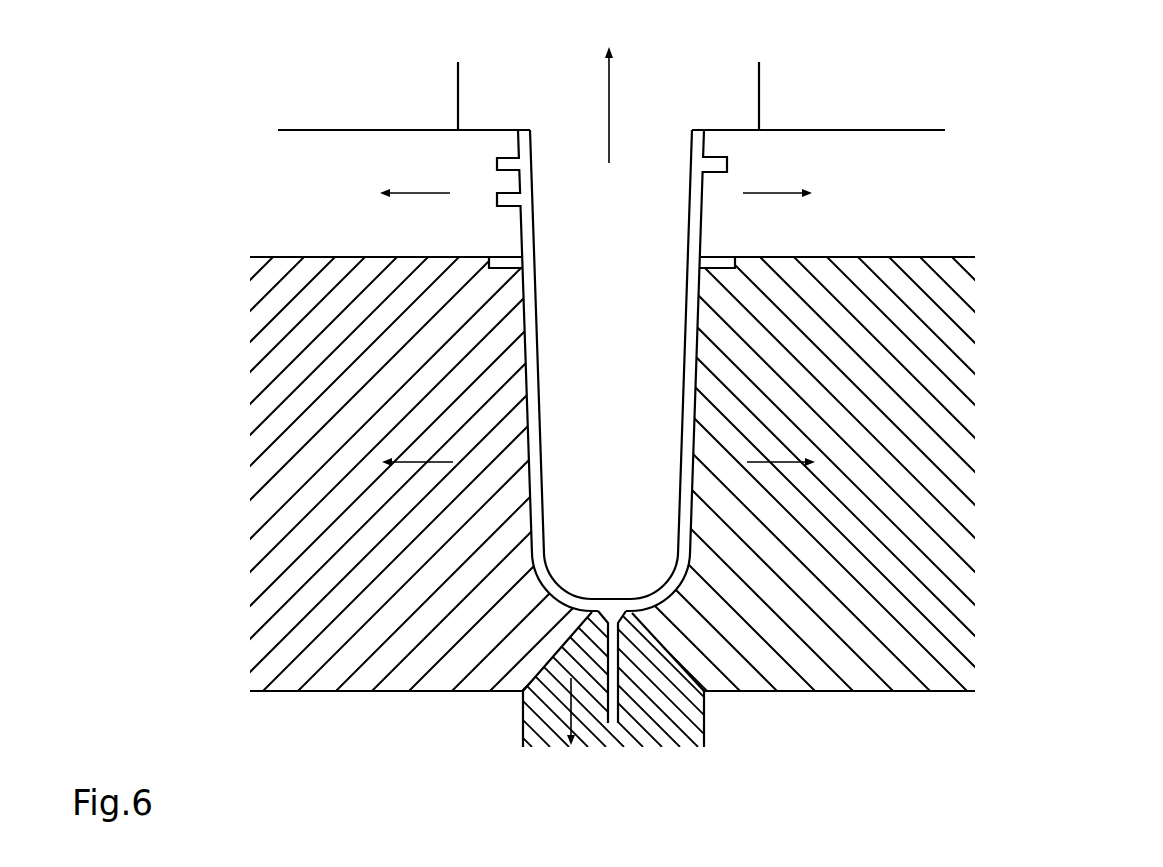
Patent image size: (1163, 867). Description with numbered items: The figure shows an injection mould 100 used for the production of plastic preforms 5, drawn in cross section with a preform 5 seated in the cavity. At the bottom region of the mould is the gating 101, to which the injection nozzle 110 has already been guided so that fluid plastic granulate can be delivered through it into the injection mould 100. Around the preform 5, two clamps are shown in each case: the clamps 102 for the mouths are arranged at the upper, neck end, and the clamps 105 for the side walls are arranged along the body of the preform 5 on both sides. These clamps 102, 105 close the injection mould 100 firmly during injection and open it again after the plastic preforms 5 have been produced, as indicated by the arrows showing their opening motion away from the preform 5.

The injection mould 100 is at (850, 71).
The clamp for the mouths 102 is at (327, 163).
The clamp for the side walls 105 is at (327, 368).
The injection nozzle 110 is at (653, 727).
The plastic preform 5 is at (698, 482).
The gating 101 is at (673, 595).